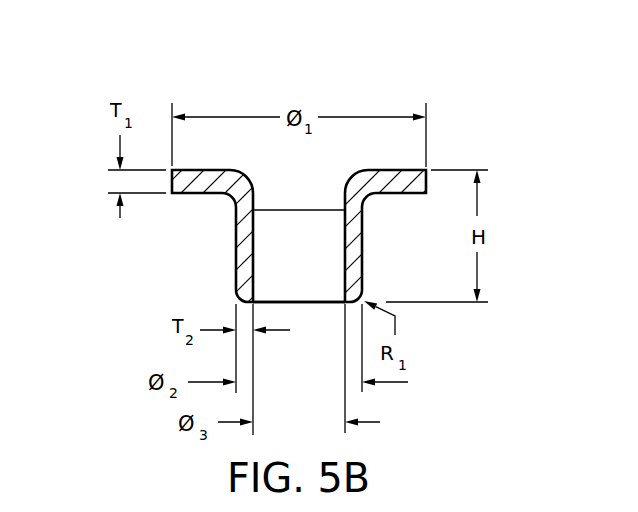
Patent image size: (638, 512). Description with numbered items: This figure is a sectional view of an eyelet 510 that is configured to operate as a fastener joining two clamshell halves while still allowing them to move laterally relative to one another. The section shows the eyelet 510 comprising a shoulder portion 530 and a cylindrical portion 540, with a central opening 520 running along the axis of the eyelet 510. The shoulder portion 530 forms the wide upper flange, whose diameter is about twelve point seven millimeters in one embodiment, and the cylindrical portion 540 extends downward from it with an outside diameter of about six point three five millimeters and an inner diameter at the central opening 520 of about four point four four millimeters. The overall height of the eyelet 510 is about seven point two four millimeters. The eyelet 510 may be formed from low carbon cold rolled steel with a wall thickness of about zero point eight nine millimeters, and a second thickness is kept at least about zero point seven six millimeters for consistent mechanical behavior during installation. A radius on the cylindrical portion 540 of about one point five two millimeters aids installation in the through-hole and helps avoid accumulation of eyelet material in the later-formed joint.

The eyelet 510 is at (345, 196).
The central opening 520 is at (320, 272).
The shoulder portion 530 is at (426, 168).
The cylindrical portion 540 is at (234, 248).